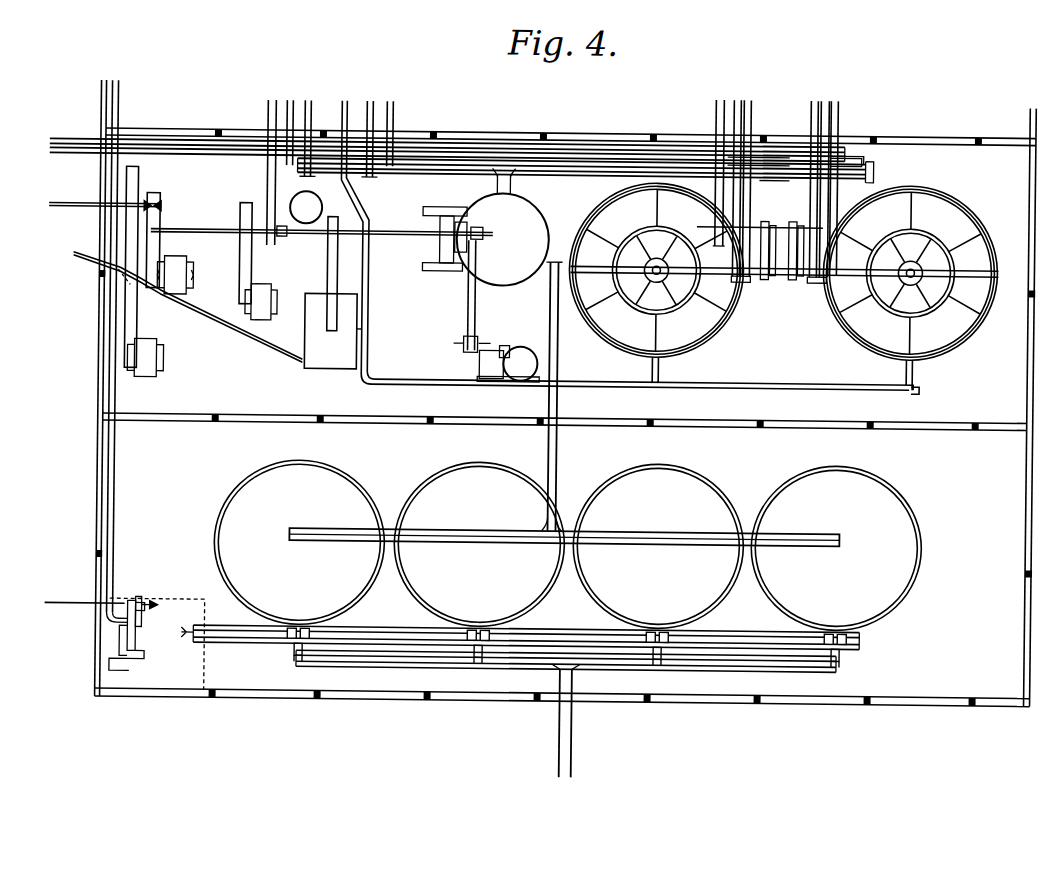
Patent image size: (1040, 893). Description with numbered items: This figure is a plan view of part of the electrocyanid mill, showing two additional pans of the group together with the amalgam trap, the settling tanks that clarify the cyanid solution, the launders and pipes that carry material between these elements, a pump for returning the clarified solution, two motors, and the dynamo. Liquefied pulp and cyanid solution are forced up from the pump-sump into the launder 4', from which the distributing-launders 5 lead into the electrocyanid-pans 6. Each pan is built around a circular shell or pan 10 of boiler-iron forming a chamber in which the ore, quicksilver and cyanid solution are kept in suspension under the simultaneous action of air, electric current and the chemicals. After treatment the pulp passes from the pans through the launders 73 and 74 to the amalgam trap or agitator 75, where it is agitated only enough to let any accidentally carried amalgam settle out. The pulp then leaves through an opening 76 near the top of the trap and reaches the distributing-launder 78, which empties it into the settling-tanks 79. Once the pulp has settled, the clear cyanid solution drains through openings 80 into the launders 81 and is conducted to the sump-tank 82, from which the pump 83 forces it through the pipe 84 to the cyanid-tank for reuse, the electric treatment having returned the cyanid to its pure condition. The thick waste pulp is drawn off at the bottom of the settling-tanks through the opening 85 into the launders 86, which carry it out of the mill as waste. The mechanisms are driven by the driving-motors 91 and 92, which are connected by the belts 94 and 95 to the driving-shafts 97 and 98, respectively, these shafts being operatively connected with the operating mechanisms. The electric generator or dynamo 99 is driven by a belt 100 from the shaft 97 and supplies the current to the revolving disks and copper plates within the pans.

The launder 4' is at (457, 149).
The distributing-launders 5 is at (290, 98).
The electrocyanid-pans 6 is at (783, 268).
The circular shell or pan 10 is at (825, 298).
The launder 73 is at (370, 100).
The launder 74 is at (540, 162).
The amalgam trap or agitator 75 is at (485, 239).
The opening 76 is at (530, 276).
The distributing-launder 78 is at (562, 344).
The settling-tanks 79 is at (567, 545).
The openings 80 is at (304, 642).
The launders 81 is at (233, 621).
The sump-tank 82 is at (157, 643).
The pump 83 is at (139, 598).
The pipe 84 is at (121, 540).
The opening 85 is at (312, 624).
The launders 86 is at (416, 667).
The driving-motor 91 is at (191, 268).
The driving-motor 92 is at (163, 366).
The belt 94 is at (159, 238).
The belt 95 is at (139, 320).
The driving-shaft 97 is at (201, 226).
The driving-shaft 98 is at (63, 208).
The electric generator or dynamo 99 is at (276, 293).
The belt 100 is at (250, 280).